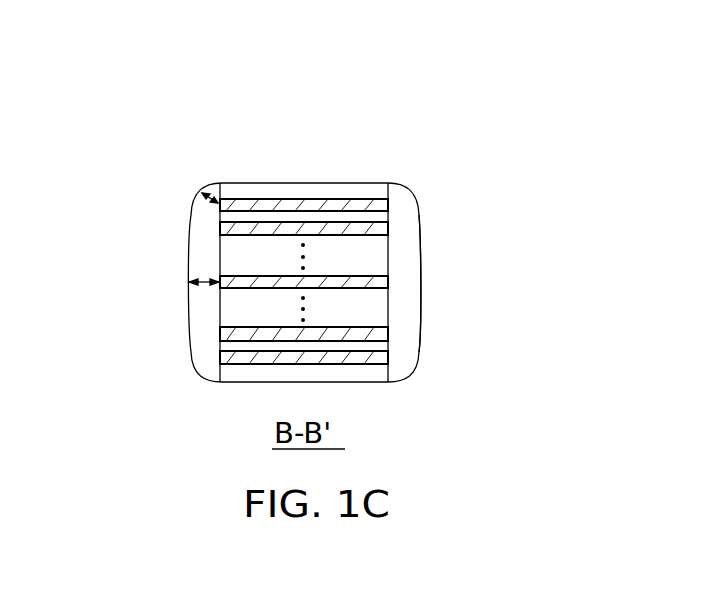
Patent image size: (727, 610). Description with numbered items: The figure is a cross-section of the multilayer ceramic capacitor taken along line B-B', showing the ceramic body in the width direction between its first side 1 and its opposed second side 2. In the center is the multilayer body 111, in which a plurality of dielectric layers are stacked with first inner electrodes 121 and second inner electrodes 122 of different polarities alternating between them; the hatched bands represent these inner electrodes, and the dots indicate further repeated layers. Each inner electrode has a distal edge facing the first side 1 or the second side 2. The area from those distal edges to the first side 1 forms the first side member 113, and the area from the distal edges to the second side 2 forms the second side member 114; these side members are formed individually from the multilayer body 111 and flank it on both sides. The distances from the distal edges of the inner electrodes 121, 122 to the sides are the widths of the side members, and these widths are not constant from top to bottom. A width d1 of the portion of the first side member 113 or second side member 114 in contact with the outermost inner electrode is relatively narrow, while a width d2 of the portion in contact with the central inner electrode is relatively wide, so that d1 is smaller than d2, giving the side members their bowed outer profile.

The first side 1 is at (314, 203).
The second side 2 is at (431, 267).
The multilayer body 111 is at (313, 157).
The first side member 113 is at (210, 182).
The second side member 114 is at (400, 185).
The first inner electrode 121 is at (384, 205).
The second inner electrode 122 is at (387, 283).
The width of the side member portion in contact with the outermost inner electrode d1 is at (209, 200).
The width of the side member portion in contact with the central inner electrode d2 is at (189, 281).